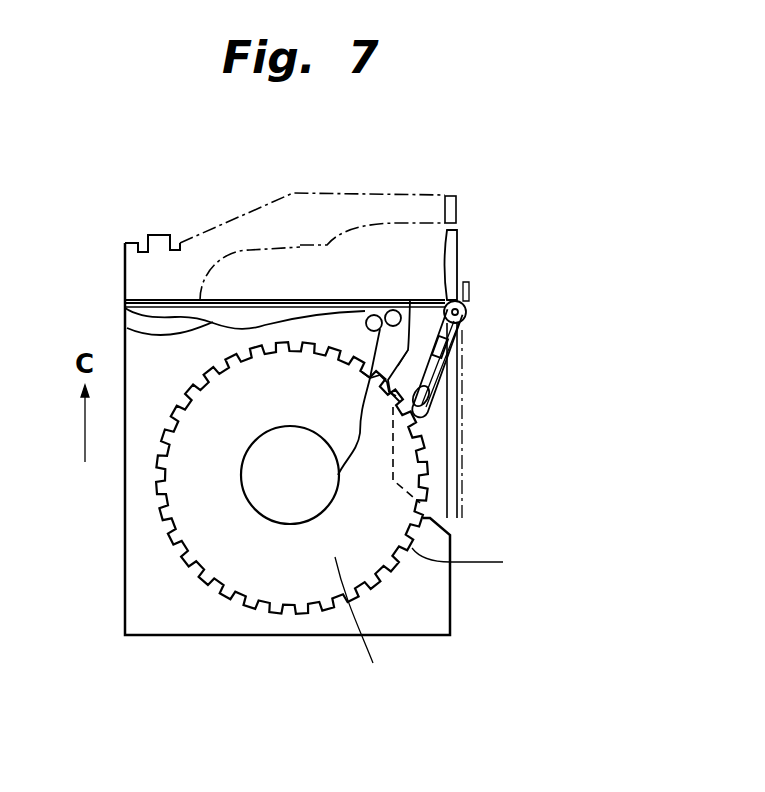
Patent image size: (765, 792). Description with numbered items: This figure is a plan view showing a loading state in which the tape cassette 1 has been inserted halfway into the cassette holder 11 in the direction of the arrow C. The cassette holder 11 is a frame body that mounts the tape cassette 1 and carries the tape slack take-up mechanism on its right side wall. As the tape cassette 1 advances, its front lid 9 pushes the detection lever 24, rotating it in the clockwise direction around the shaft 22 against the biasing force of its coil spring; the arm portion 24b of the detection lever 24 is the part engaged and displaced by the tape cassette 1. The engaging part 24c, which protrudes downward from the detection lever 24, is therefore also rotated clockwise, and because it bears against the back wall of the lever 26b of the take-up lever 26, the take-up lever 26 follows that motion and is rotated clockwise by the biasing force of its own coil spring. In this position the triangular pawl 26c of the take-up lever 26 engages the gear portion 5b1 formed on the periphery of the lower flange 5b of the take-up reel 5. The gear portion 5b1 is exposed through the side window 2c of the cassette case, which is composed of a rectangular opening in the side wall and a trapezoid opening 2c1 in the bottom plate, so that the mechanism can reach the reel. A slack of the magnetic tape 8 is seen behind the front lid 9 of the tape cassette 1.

The tape cassette 1 is at (188, 637).
The side window 2c is at (431, 443).
The trapezoid opening 2c1 is at (447, 337).
The take-up reel 5 is at (276, 537).
The lower flange 5b is at (366, 628).
The gear portion 5b1 is at (479, 568).
The magnetic tape 8 is at (127, 328).
The front lid 9 is at (268, 300).
The cassette holder 11 is at (310, 193).
The shaft 22 is at (468, 312).
The detection lever 24 is at (462, 245).
The arm portion 24b is at (460, 268).
The engaging part 24c is at (410, 300).
The take-up lever 26 is at (463, 372).
The lever 26b is at (435, 400).
The triangular pawl 26c is at (425, 393).